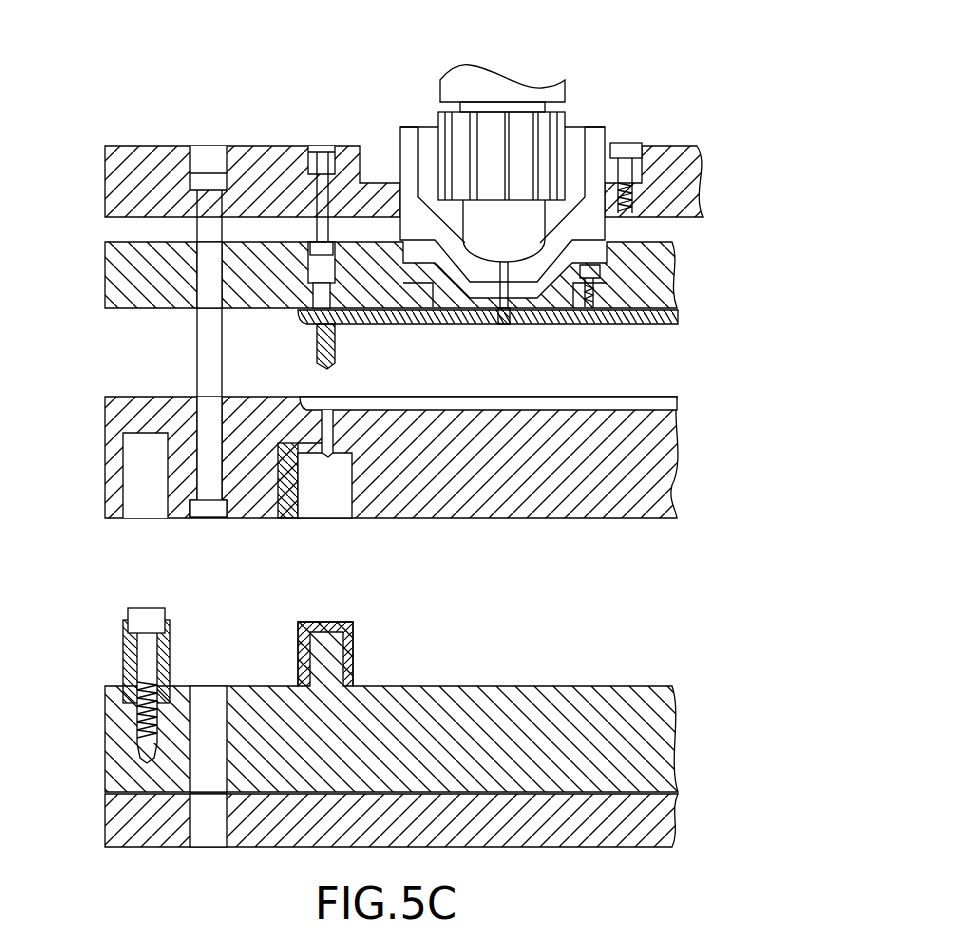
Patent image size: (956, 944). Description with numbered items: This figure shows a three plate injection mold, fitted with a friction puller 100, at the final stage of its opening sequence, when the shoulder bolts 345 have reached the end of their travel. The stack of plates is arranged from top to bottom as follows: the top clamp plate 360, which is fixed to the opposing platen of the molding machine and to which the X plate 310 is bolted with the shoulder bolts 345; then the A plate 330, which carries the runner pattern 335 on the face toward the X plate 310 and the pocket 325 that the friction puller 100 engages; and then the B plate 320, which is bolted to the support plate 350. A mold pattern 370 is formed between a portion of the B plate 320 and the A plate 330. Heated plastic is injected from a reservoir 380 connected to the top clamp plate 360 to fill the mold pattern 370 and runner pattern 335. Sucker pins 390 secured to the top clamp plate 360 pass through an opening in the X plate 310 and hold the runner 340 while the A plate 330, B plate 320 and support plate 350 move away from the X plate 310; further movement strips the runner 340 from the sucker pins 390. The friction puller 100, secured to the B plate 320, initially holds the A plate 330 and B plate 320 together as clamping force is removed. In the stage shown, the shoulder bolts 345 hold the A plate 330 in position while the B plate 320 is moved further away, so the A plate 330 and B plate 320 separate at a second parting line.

The friction puller 100 is at (143, 628).
The X plate 310 is at (655, 268).
The B plate 320 is at (667, 728).
The pocket 325 is at (125, 495).
The A plate 330 is at (459, 466).
The runner pattern 335 is at (658, 403).
The runner 340 is at (680, 312).
The shoulder bolts 345 is at (207, 158).
The support plate 350 is at (653, 816).
The top clamp plate 360 is at (677, 148).
The mold pattern 370 is at (312, 450).
The reservoir 380 is at (575, 137).
The sucker pins 390 is at (308, 172).